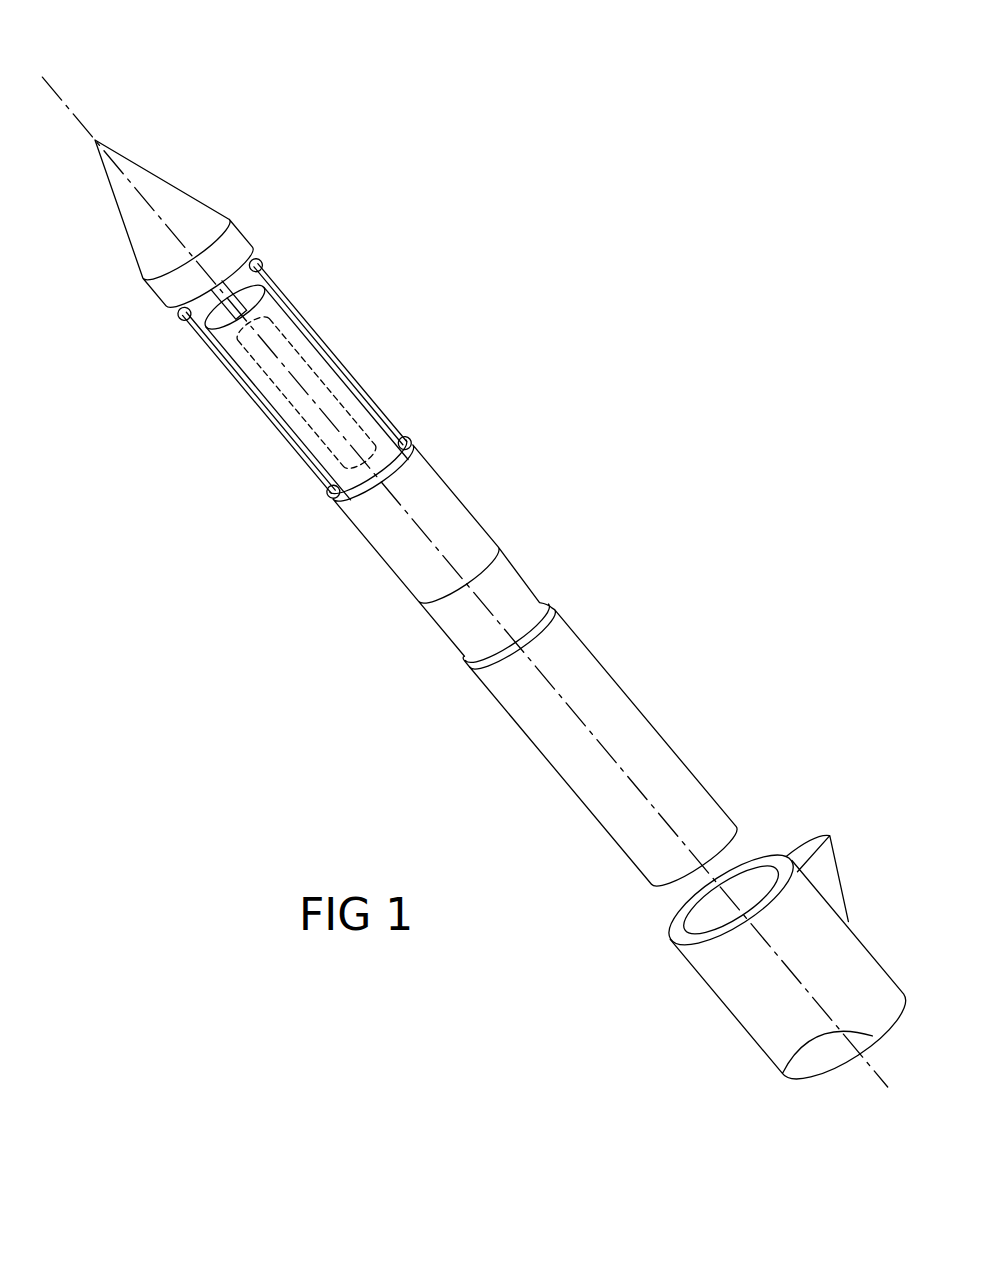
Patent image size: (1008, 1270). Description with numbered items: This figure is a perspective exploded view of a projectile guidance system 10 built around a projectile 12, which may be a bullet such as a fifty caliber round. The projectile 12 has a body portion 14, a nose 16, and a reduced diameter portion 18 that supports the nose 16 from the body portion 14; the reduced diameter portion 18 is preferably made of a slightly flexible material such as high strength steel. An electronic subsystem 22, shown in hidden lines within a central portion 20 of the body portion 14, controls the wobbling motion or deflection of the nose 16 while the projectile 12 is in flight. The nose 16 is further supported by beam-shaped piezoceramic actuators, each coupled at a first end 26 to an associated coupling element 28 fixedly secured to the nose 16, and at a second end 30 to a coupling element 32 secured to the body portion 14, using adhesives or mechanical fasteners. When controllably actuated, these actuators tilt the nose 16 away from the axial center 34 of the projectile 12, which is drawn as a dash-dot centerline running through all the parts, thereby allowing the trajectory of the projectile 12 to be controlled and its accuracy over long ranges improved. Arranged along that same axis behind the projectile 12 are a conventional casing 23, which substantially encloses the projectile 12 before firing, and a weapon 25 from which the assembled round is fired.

The system 10 is at (527, 348).
The projectile 12 is at (478, 514).
The body portion 14 is at (432, 472).
The nose 16 is at (143, 247).
The reduced diameter portion 18 is at (263, 268).
The central portion 20 is at (212, 328).
The electronic subsystem 22 is at (250, 411).
The casing 23 is at (572, 760).
The weapon 25 is at (733, 993).
The first end 26 is at (194, 330).
The coupling element 28 is at (174, 318).
The second end 30 is at (297, 453).
The coupling element 32 is at (330, 490).
The axial center 34 is at (64, 105).